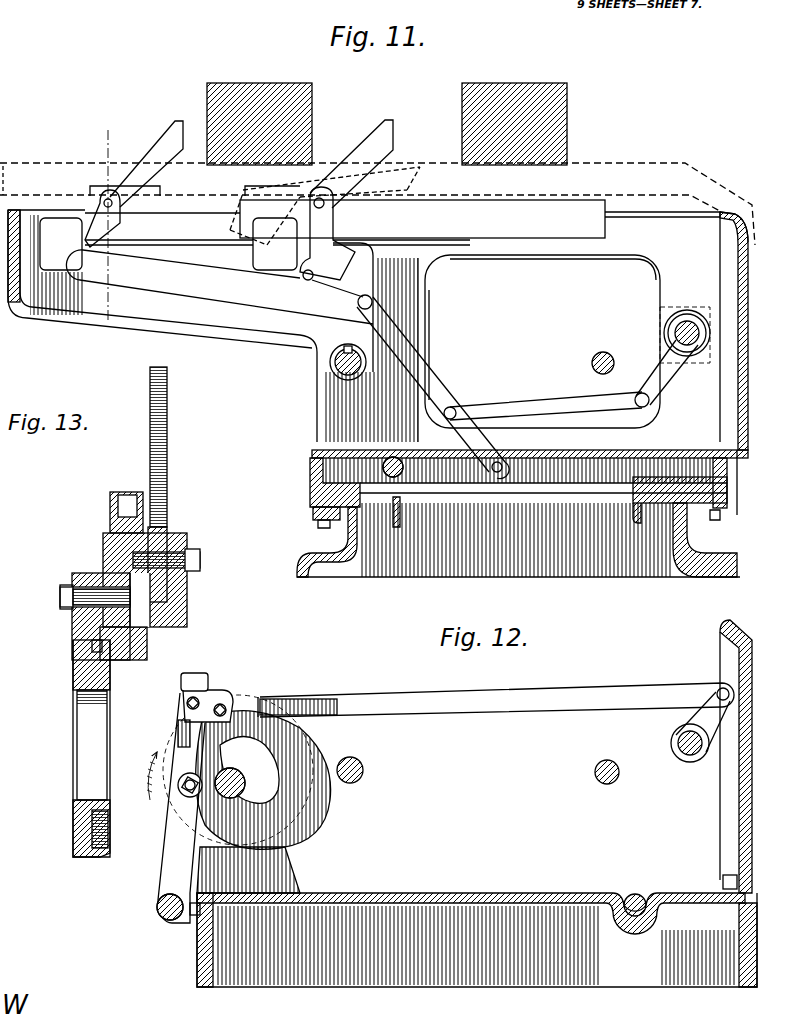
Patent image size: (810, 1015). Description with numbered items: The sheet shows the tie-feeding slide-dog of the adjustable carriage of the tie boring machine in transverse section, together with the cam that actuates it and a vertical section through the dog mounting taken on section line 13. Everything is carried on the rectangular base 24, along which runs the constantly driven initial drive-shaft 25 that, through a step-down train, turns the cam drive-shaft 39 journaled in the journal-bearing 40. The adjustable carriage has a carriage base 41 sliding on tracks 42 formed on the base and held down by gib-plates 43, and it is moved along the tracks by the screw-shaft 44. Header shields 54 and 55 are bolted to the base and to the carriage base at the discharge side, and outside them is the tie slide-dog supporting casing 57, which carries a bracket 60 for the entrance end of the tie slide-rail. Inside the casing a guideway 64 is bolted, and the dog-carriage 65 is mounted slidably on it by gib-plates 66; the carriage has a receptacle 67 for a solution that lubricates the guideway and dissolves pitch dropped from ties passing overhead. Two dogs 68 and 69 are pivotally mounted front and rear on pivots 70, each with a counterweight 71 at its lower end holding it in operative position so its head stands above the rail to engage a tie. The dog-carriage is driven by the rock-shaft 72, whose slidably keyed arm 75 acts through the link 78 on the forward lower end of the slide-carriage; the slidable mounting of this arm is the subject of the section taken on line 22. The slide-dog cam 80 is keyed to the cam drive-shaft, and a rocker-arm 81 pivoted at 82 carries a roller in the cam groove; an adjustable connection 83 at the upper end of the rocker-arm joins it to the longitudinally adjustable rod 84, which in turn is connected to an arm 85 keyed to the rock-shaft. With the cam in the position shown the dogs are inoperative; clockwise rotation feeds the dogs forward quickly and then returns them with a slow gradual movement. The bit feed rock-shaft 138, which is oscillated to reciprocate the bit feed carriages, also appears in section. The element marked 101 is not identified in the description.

In FIG. 11, the section line 13 is at (114, 151).
In FIG. 11, the section line 22 is at (687, 418).
In FIG. 11, the rectangular base 24 is at (392, 560).
In FIG. 12, the rectangular base 24 is at (447, 896).
In FIG. 12, the initial drive-shaft 25 is at (637, 893).
In FIG. 12, the cam drive-shaft 39 is at (230, 800).
In FIG. 12, the journal-bearing 40 is at (290, 863).
In FIG. 11, the carriage base 41 is at (310, 488).
In FIG. 11, the tracks 42 is at (318, 515).
In FIG. 11, the gib-plates 43 is at (330, 528).
In FIG. 11, the screw-shaft 44 is at (394, 457).
In FIG. 12, the header shield 54 is at (728, 838).
In FIG. 11, the header shield 55 is at (740, 252).
In FIG. 11, the tie slide-dog supporting casing 57 is at (282, 336).
In FIG. 13, the tie slide-dog supporting casing 57 is at (78, 745).
In FIG. 11, the bracket 60 is at (13, 208).
In FIG. 11, the guideway 64 is at (345, 219).
In FIG. 13, the guideway 64 is at (105, 573).
In FIG. 11, the dog-carriage 65 is at (277, 234).
In FIG. 13, the dog-carriage 65 is at (143, 660).
In FIG. 13, the gib-plates 66 is at (108, 533).
In FIG. 11, the receptacle 67 is at (104, 186).
In FIG. 13, the receptacle 67 is at (118, 492).
In FIG. 11, the dog 68 is at (393, 121).
In FIG. 11, the dog 69 is at (182, 121).
In FIG. 13, the dog 69 is at (168, 493).
In FIG. 11, the pivot 70 is at (310, 205).
In FIG. 13, the pivot 70 is at (180, 620).
In FIG. 11, the counterweight 71 is at (66, 260).
In FIG. 11, the rock-shaft 72 is at (675, 334).
In FIG. 12, the rock-shaft 72 is at (690, 756).
In FIG. 11, the arm 75 is at (653, 366).
In FIG. 11, the link 78 is at (473, 400).
In FIG. 12, the slide-dog cam 80 is at (330, 756).
In FIG. 12, the rocker-arm 81 is at (165, 863).
In FIG. 12, the pivot 82 is at (158, 912).
In FIG. 12, the adjustable connection 83 is at (214, 696).
In FIG. 12, the rod 84 is at (450, 698).
In FIG. 12, the arm 85 is at (690, 728).
In FIG. 11, the rod 101 is at (597, 360).
In FIG. 12, the rod 101 is at (607, 785).
In FIG. 11, the bit feed rock-shaft 138 is at (349, 350).
In FIG. 12, the bit feed rock-shaft 138 is at (364, 772).